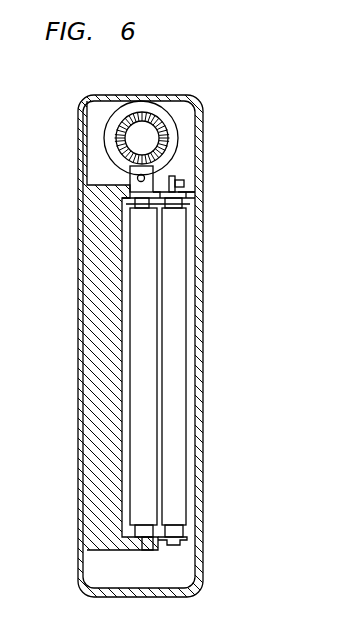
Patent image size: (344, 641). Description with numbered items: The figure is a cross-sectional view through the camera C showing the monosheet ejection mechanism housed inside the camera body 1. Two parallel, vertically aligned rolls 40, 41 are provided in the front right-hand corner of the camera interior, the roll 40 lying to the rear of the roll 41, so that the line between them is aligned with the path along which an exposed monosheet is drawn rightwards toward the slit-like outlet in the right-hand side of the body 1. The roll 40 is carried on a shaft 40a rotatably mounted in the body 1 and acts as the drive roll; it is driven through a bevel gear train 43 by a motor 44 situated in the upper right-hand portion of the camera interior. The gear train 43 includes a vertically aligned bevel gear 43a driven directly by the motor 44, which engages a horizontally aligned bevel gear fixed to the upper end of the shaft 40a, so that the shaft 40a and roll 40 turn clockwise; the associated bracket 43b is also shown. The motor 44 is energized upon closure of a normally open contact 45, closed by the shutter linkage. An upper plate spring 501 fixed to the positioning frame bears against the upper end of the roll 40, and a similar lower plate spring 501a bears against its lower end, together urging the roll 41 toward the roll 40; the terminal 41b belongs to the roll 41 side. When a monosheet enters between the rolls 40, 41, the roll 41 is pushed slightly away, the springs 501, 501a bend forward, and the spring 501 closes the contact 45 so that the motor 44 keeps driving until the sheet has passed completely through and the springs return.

The camera body 1 is at (78, 222).
The camera C is at (90, 518).
The roll 40 is at (141, 378).
The shaft 40a is at (122, 200).
The roll 41 is at (172, 378).
The second battery terminal 41b is at (180, 226).
The bevel gear train 43 is at (162, 133).
The bevel gear 43a is at (128, 113).
The gear bracket 43b is at (160, 162).
The motor 44 is at (158, 112).
The contact 45 is at (181, 183).
The plate spring 501 is at (188, 203).
The plate spring 501a is at (187, 539).